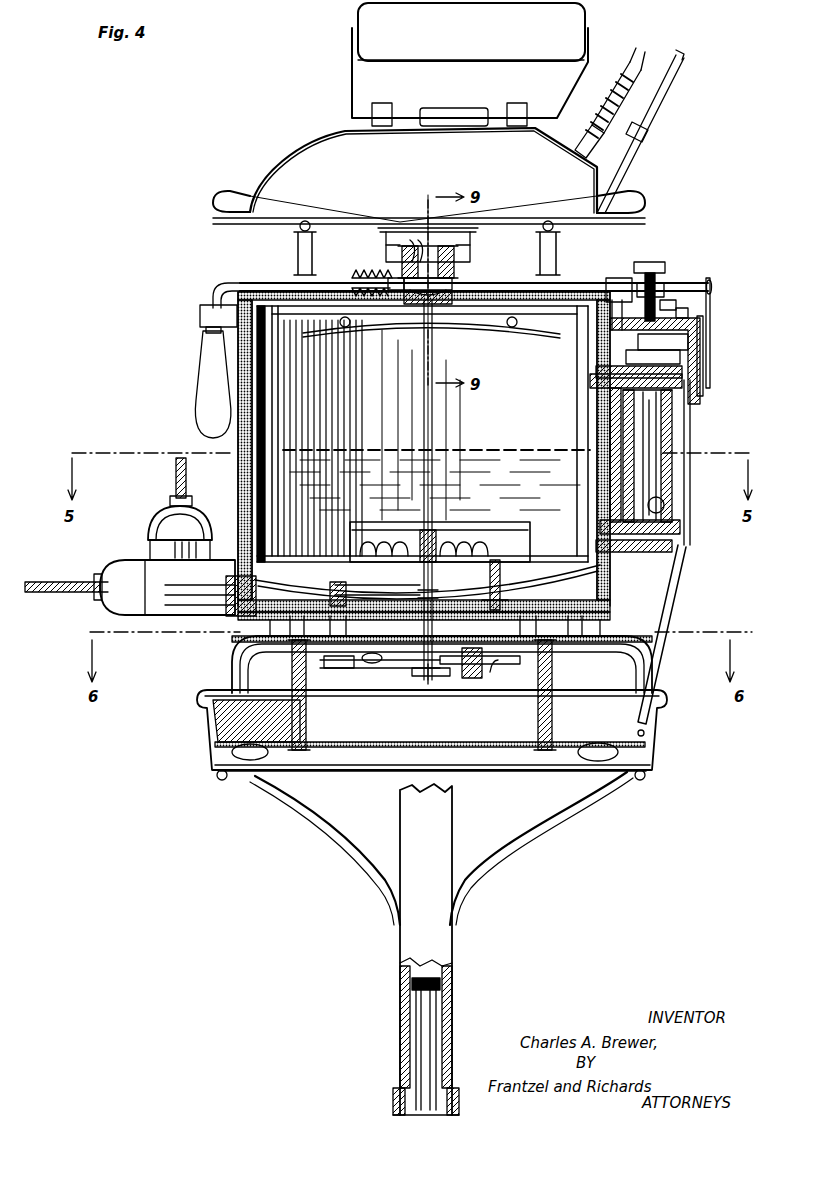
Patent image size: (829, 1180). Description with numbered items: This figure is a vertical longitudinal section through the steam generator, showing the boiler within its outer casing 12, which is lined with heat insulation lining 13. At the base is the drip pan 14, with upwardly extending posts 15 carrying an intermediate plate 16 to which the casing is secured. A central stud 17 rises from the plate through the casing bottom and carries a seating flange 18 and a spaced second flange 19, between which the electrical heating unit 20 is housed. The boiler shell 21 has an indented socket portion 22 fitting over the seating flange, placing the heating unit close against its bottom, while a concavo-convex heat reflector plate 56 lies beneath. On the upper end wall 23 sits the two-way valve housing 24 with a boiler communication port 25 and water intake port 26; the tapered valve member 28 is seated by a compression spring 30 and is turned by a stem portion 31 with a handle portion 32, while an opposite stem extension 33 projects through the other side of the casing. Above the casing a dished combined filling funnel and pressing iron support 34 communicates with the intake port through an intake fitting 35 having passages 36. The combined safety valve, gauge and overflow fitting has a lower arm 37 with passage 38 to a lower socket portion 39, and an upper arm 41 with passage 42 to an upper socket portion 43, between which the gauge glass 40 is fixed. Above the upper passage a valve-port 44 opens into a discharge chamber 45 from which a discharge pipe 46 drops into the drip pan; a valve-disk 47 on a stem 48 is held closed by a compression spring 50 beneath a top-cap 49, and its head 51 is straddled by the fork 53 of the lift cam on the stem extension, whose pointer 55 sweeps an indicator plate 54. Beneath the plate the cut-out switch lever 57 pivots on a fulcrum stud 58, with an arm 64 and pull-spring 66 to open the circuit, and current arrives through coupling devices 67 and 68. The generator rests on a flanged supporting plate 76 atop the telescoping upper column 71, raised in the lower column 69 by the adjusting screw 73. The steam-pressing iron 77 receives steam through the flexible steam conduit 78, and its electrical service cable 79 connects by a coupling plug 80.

The outer casing 12 is at (598, 290).
The lining 13 is at (268, 437).
The drip pan 14 is at (420, 748).
The posts 15 is at (308, 718).
The intermediate plate 16 is at (232, 658).
The stud 17 is at (422, 586).
The seating flange 18 is at (438, 530).
The second flange 19 is at (458, 556).
The electrical heating unit 20 is at (505, 548).
The boiler shell 21 is at (262, 418).
The indented socket portion 22 is at (505, 528).
The upper end wall 23 is at (548, 300).
The valve housing 24 is at (452, 262).
The boiler communication port 25 is at (452, 334).
The water intake port 26 is at (398, 278).
The valve member 28 is at (455, 282).
The compression spring 30 is at (362, 276).
The stem portion 31 is at (263, 282).
The handle portion 32 is at (198, 382).
The stem extension 33 is at (612, 280).
The combined filling funnel and pressing iron support 34 is at (220, 222).
The intake fitting 35 is at (455, 232).
The passages 36 is at (412, 238).
The lower arm 37 is at (672, 548).
The passage 38 is at (625, 556).
The lower socket portion 39 is at (664, 506).
The gauge glass 40 is at (674, 442).
The upper arm 41 is at (610, 400).
The passage 42 is at (590, 382).
The upper socket portion 43 is at (658, 412).
The valve-port 44 is at (690, 374).
The discharge chamber 45 is at (690, 343).
The discharge pipe 46 is at (692, 480).
The valve-disk 47 is at (682, 358).
The stem 48 is at (672, 300).
The top-cap 49 is at (688, 308).
The compression spring 50 is at (702, 326).
The head 51 is at (662, 268).
The fork 53 is at (668, 283).
The indicator plate 54 is at (704, 396).
The pointer 55 is at (710, 382).
The heat reflector plate 56 is at (372, 604).
The lever 57 is at (345, 667).
The fulcrum stud 58 is at (385, 667).
The arm 64 is at (504, 667).
The pull-spring 66 is at (462, 680).
The coupling member 67 is at (150, 612).
The coupling plug 68 is at (166, 516).
The lower column 69 is at (392, 1092).
The upper column 71 is at (454, 986).
The adjusting screw 73 is at (436, 1040).
The flanged supporting plate 76 is at (552, 775).
The steam-pressing iron 77 is at (322, 145).
The flexible steam conduit 78 is at (660, 103).
The electrical service cable 79 is at (638, 52).
The coupling plug 80 is at (120, 606).